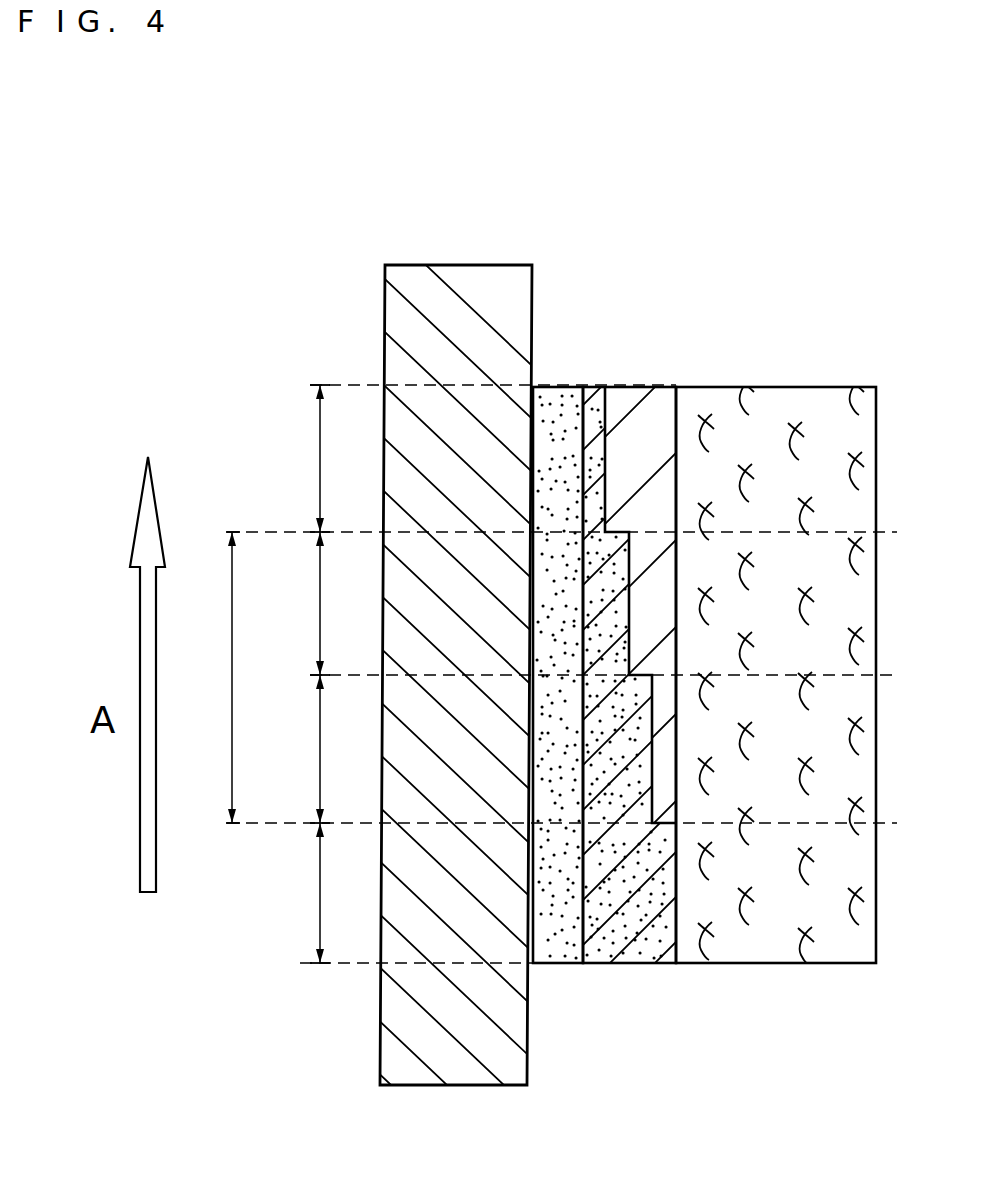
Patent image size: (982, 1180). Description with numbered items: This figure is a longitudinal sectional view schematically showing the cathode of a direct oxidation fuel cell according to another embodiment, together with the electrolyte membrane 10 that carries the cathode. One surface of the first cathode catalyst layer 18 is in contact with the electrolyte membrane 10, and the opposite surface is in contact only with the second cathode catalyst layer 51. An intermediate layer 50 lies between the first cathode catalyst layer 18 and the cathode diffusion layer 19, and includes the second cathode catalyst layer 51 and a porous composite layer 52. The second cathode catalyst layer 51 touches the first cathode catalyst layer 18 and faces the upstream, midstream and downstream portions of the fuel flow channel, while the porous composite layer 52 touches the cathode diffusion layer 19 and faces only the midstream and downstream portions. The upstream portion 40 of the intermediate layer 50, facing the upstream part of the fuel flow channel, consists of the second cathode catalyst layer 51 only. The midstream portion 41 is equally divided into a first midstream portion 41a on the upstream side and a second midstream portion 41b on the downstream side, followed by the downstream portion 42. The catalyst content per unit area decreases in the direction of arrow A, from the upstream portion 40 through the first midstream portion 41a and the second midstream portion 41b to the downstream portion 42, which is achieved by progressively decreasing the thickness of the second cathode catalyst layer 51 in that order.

The base member 10 is at (473, 282).
The first cathode catalyst layer 18 is at (561, 393).
The cathode diffusion layer 19 is at (805, 415).
The upstream portion 40 is at (297, 893).
The midstream portion 41 is at (211, 677).
The first midstream portion 41a is at (293, 749).
The second midstream portion 41b is at (296, 603).
The downstream portion 42 is at (304, 458).
The intermediate layer 50 is at (638, 707).
The second cathode catalyst layer 51 is at (605, 940).
The porous composite layer 52 is at (662, 798).